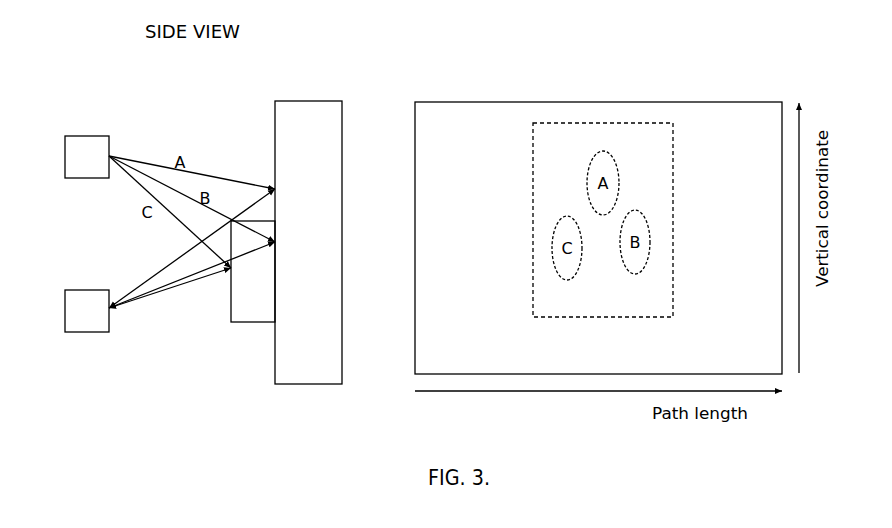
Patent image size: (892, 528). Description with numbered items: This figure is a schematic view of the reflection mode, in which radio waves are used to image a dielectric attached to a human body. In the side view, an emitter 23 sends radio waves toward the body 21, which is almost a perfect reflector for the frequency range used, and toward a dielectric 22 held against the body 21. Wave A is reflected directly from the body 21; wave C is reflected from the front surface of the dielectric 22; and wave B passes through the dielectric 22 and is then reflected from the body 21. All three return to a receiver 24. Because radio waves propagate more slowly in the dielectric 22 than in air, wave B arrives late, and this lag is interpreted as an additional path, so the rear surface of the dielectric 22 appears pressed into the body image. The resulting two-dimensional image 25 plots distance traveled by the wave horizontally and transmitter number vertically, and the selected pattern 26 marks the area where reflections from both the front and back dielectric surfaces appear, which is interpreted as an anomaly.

The body 21 is at (308, 242).
The dielectric 22 is at (253, 271).
The emitter 23 is at (87, 157).
The receiver 24 is at (87, 311).
The 2D image 25 is at (598, 238).
The selected pattern 26 is at (603, 220).